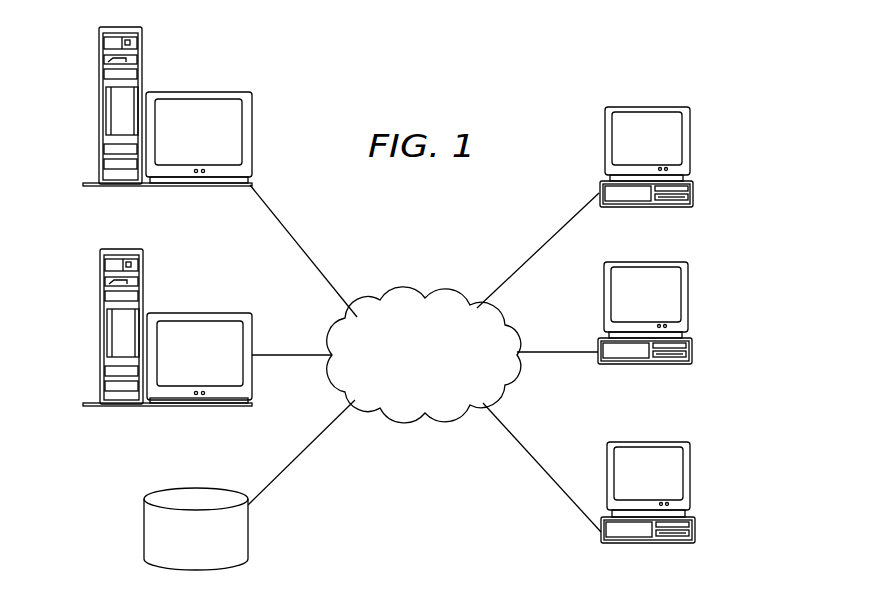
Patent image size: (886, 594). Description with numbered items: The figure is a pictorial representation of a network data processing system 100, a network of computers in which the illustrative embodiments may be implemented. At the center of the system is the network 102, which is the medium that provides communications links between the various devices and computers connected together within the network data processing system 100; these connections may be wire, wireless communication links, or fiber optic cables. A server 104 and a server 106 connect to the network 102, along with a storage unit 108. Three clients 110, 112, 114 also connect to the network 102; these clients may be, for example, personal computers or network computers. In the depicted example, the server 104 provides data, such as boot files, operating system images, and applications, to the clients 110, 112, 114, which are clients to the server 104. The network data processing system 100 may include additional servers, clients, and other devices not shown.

The network data processing system 100 is at (787, 104).
The network 102 is at (444, 386).
The server 104 is at (99, 107).
The server 106 is at (101, 330).
The storage unit 108 is at (144, 528).
The client 110 is at (690, 148).
The client 112 is at (688, 302).
The client 114 is at (690, 483).